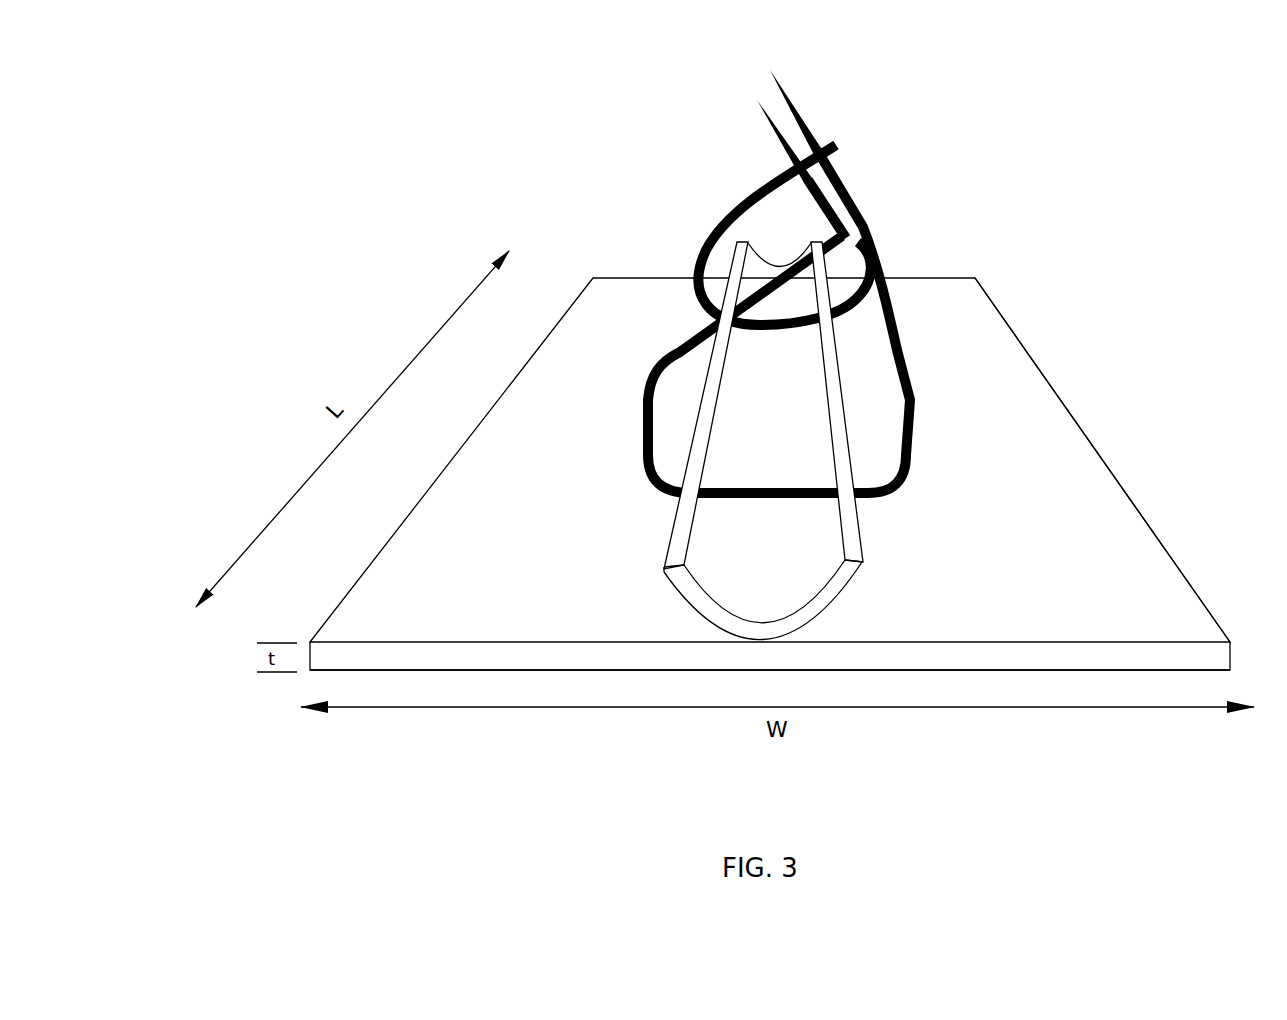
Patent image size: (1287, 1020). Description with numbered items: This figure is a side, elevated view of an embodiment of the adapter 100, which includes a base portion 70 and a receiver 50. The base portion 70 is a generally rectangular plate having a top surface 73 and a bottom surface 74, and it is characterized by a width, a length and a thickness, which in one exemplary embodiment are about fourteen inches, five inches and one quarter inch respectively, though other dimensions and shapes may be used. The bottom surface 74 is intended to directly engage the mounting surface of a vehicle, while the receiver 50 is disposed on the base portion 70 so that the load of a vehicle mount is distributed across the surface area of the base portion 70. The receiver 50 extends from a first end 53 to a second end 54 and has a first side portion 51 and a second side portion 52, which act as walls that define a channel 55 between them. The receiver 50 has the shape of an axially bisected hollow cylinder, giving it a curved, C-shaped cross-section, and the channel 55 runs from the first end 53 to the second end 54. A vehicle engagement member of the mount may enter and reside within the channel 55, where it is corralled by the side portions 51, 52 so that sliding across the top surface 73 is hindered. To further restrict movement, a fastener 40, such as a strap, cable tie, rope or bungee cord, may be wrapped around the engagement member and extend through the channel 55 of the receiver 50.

The adapter 100 is at (356, 200).
The fastener 40 is at (836, 188).
The receiver 50 is at (760, 456).
The first side portion 51 is at (687, 527).
The second side portion 52 is at (857, 522).
The first end 53 is at (685, 612).
The second end 54 is at (783, 246).
The channel 55 is at (760, 372).
The base portion 70 is at (1033, 420).
The top surface 73 is at (1137, 560).
The bottom surface 74 is at (1167, 647).